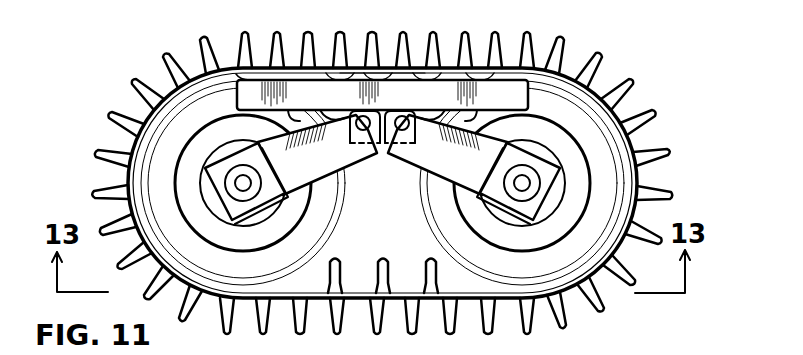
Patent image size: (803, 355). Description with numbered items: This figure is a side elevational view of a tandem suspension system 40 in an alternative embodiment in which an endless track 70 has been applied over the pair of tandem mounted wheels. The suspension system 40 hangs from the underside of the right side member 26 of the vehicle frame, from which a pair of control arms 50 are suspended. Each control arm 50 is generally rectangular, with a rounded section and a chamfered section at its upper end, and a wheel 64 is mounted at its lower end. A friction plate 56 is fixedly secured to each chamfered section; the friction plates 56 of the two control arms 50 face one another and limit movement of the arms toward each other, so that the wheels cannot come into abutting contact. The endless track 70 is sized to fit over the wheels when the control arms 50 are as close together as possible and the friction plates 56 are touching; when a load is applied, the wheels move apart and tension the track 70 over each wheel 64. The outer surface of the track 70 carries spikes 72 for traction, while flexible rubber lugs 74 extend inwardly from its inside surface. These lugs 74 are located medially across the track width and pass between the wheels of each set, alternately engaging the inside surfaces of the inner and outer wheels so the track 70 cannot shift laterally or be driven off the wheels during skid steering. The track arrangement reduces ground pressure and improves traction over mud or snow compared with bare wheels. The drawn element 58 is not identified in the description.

The right side member 26 is at (357, 80).
The tandem suspension system 40 is at (441, 92).
The control arm 50 is at (327, 158).
The friction plate 56 is at (396, 156).
The mount 58 is at (286, 78).
The wheel 64 is at (611, 188).
The endless track 70 is at (646, 109).
The spikes 72 is at (166, 58).
The flexible rubber lugs 74 is at (403, 80).